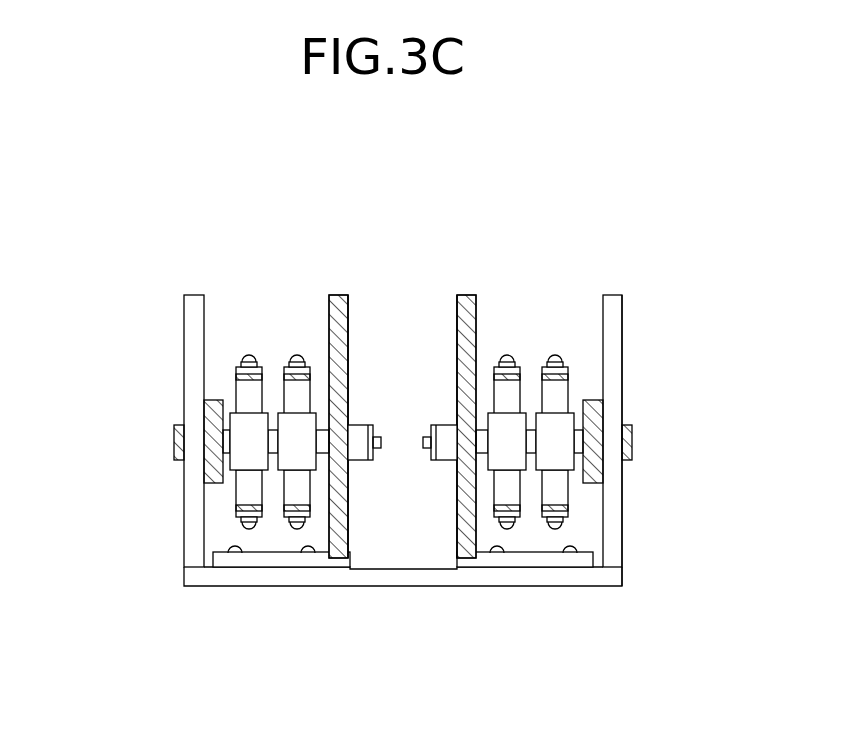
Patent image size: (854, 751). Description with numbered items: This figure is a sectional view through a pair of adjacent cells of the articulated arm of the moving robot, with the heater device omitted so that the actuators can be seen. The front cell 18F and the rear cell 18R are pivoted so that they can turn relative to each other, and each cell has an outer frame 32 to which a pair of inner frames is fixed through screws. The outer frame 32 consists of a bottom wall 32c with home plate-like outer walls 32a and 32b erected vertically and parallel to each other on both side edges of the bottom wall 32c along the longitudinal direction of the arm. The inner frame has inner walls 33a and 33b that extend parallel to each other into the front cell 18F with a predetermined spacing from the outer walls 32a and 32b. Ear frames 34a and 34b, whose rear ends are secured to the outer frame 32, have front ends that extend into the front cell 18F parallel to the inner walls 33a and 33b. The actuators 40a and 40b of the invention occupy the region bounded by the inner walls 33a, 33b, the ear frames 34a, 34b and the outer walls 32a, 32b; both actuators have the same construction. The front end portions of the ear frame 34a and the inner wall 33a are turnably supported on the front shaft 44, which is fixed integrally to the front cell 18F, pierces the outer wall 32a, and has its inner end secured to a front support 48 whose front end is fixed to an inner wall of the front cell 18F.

The outer frame 32 is at (404, 487).
The outer wall 32a is at (612, 378).
The outer wall 32b is at (190, 338).
The bottom wall 32c is at (353, 573).
The inner wall 33a is at (455, 297).
The inner wall 33b is at (536, 560).
The ear frame 34a is at (597, 470).
The ear frame 34b is at (207, 420).
The actuator 40a is at (592, 515).
The actuator 40b is at (228, 507).
The front shaft 44 is at (588, 437).
The front support 48 is at (438, 425).
The front cell 18F is at (626, 333).
The rear cell 18R is at (455, 492).